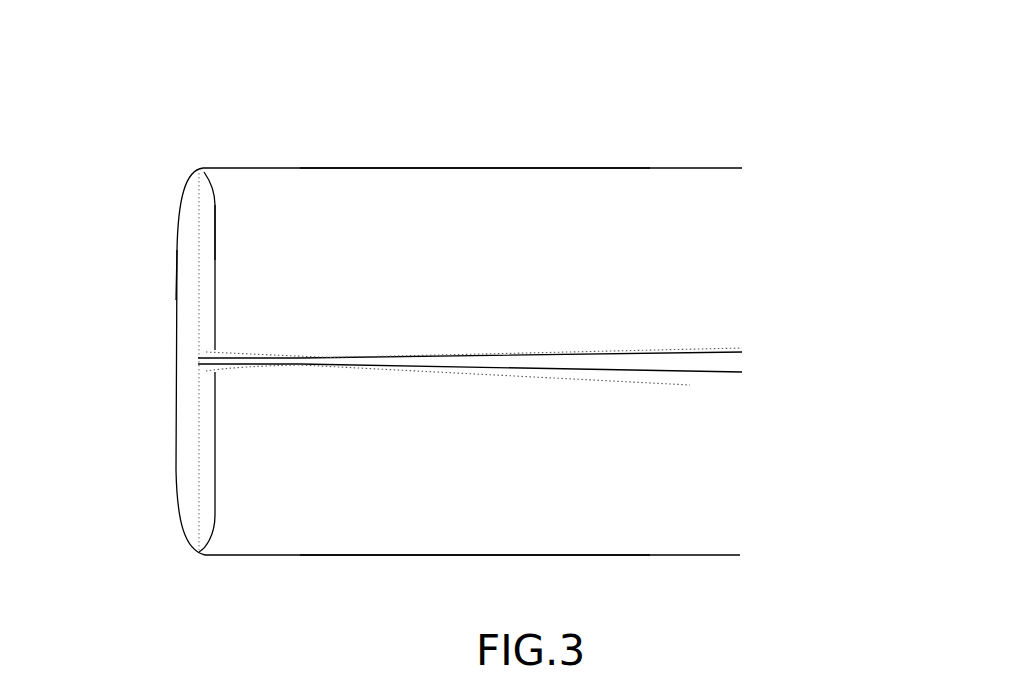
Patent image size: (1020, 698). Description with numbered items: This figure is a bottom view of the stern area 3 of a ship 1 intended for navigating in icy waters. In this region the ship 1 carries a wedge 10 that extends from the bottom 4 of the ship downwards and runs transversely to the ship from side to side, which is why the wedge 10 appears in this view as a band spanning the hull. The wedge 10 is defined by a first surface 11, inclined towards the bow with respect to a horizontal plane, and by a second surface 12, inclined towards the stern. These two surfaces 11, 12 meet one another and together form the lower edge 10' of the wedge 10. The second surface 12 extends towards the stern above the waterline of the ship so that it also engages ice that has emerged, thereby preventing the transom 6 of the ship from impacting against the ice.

The ship 1 is at (685, 128).
The stern area 3 is at (218, 141).
The bottom 4 is at (502, 222).
The transom 6 is at (176, 367).
The wedge 10 is at (147, 404).
The lower edge 10' is at (249, 409).
The first surface 11 is at (210, 208).
The second surface 12 is at (190, 233).